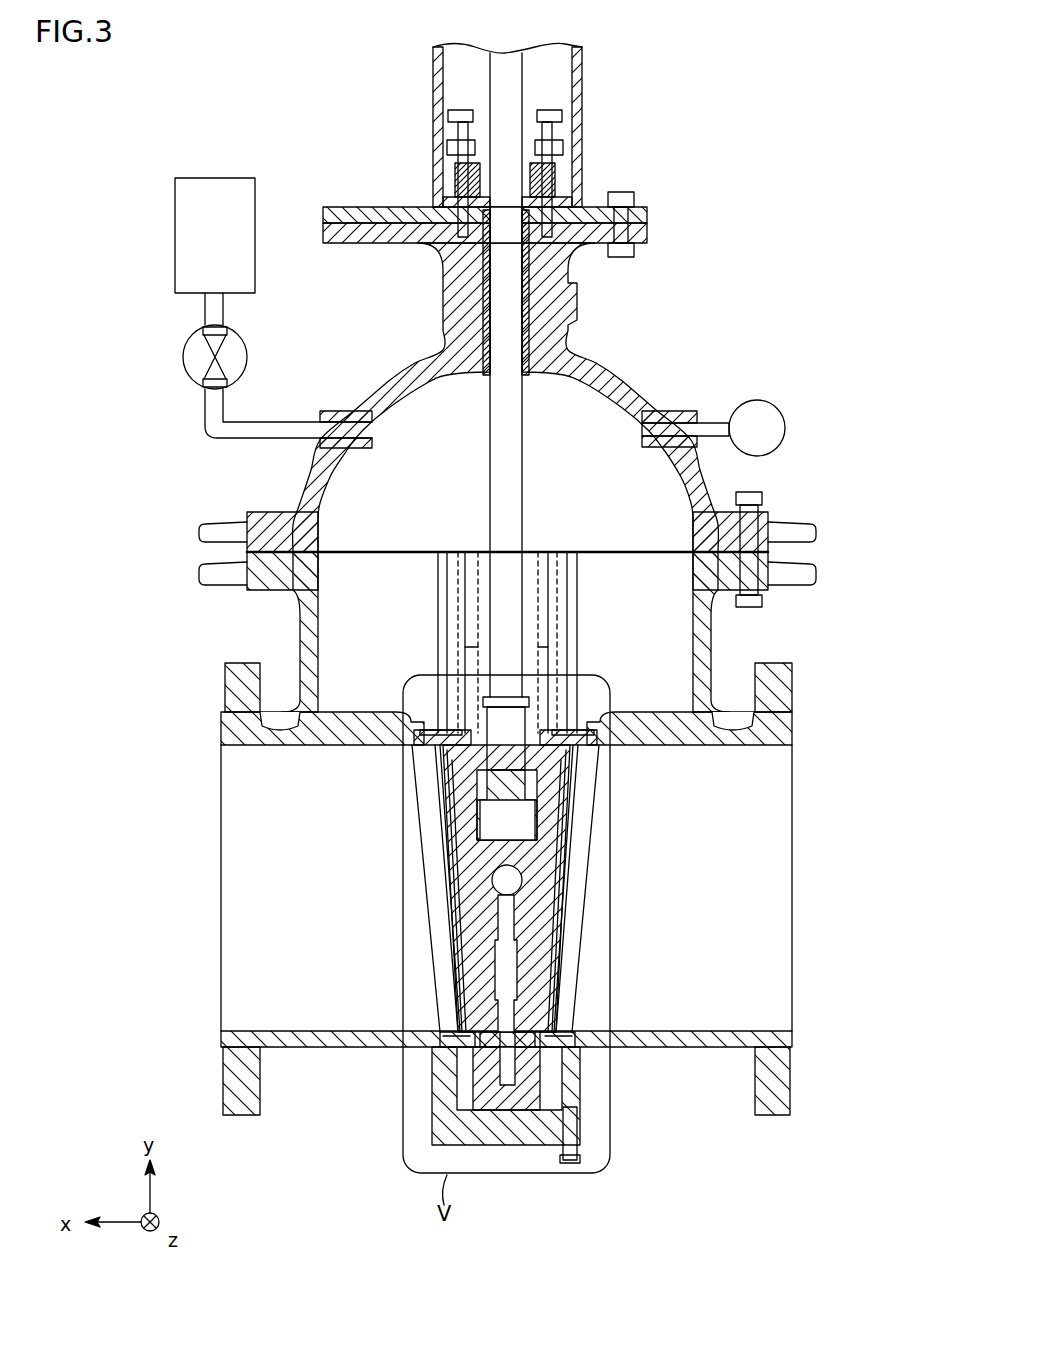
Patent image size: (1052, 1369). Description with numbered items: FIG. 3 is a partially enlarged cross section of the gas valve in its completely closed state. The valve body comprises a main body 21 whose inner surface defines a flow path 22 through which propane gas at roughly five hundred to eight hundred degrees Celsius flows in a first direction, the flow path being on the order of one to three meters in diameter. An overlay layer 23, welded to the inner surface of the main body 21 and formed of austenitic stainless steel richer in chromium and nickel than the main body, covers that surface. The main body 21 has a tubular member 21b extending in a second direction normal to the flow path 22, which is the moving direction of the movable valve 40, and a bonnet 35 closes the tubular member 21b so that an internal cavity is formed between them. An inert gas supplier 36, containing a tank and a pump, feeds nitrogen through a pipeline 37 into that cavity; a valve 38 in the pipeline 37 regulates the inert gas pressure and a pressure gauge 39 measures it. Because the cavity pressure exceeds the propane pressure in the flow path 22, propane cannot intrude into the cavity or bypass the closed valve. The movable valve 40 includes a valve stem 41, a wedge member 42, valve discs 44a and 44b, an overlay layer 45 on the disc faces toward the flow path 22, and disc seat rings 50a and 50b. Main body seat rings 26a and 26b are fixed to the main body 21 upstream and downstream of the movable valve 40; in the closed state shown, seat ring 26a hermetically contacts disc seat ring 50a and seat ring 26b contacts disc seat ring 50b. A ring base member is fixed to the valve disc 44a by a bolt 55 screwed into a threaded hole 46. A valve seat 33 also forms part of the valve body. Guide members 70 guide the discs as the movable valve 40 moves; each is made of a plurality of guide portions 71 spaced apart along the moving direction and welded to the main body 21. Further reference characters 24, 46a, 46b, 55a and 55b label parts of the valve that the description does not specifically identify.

The main body 21 is at (223, 1040).
The tubular member 21b is at (712, 640).
The flow path 22 is at (767, 768).
The overlay layer 23 is at (240, 757).
The flange rib 24 is at (260, 710).
The main body seat ring 26a is at (583, 750).
The main body seat ring 26b is at (428, 750).
The valve seat 33 is at (510, 1146).
The bonnet 35 is at (703, 476).
The inert gas supplier 36 is at (175, 236).
The pipeline 37 is at (205, 416).
The valve 38 is at (183, 357).
The pressure gauge 39 is at (781, 416).
The movable valve 40 is at (505, 854).
The valve stem 41 is at (524, 450).
The wedge member 42 is at (453, 882).
The valve disc 44a is at (565, 908).
The valve disc 44b is at (453, 907).
The overlay layer 45 is at (450, 928).
The threaded hole 46 is at (453, 1007).
The downstream seat ring 46a is at (580, 737).
The upstream seat ring 46b is at (431, 737).
The disc seat ring 50a is at (577, 765).
The disc seat ring 50b is at (434, 765).
The bolt 55 is at (490, 1048).
The downstream seal 55a is at (548, 730).
The upstream seal 55b is at (463, 730).
The guide member 70 is at (325, 642).
The guide portion 71 is at (460, 605).